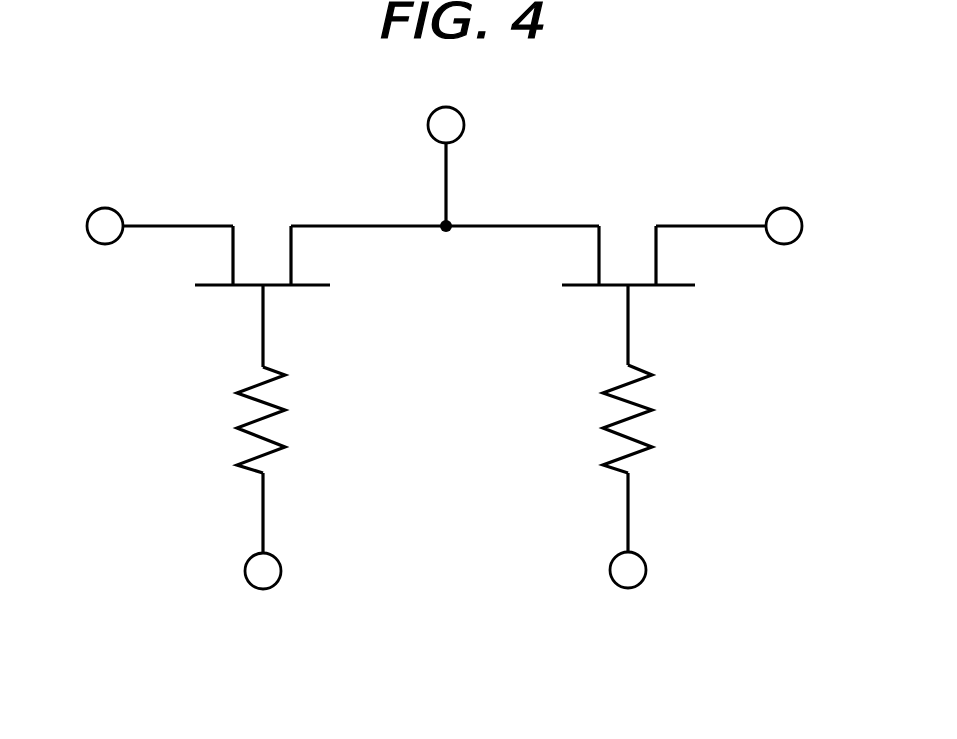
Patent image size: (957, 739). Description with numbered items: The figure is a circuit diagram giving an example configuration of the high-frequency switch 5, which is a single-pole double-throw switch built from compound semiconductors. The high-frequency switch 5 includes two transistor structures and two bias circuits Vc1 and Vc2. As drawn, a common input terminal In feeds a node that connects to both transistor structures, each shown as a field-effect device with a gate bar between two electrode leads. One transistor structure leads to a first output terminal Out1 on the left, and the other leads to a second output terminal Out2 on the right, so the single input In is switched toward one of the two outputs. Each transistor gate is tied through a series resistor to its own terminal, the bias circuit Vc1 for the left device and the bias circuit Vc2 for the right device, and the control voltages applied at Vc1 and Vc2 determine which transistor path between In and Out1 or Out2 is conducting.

The high-frequency switch 5 is at (152, 105).
The input terminal In is at (463, 123).
The first output terminal Out1 is at (102, 208).
The second output terminal Out2 is at (786, 208).
The bias circuit Vc1 is at (282, 572).
The bias circuit Vc2 is at (647, 571).